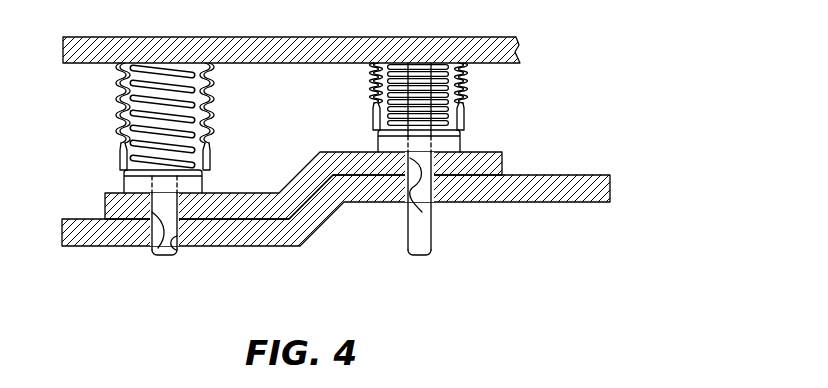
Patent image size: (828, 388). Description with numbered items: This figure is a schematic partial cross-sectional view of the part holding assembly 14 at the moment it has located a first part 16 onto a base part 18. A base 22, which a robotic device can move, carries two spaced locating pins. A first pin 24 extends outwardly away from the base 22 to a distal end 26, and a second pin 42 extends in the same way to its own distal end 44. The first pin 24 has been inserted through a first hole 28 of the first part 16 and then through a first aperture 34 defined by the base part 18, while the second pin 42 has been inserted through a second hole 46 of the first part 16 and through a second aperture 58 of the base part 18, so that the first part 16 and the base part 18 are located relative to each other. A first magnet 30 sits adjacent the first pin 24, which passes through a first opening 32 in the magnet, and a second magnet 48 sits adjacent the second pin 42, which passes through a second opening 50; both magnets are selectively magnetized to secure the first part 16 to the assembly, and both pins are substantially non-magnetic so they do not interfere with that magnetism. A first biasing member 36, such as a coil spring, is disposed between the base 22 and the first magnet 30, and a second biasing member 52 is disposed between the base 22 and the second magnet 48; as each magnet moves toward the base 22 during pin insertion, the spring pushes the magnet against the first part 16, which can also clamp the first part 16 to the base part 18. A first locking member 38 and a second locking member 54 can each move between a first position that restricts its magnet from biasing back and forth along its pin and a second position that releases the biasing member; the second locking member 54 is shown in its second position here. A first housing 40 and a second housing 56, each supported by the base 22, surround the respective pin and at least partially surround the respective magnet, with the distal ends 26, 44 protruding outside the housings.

The part holding assembly 14 is at (578, 52).
The first part 16 is at (505, 163).
The base part 18 is at (612, 190).
The base 22 is at (272, 48).
The first pin 24 is at (120, 126).
The distal end 26 is at (180, 245).
The first hole 28 is at (153, 238).
The first magnet 30 is at (204, 184).
The first opening 32 is at (152, 180).
The first aperture 34 is at (166, 258).
The first biasing member 36 is at (211, 108).
The first locking member 38 is at (121, 168).
The first housing 40 is at (209, 150).
The second pin 42 is at (470, 83).
The distal end 44 is at (416, 258).
The second hole 46 is at (407, 202).
The second magnet 48 is at (455, 150).
The second opening 50 is at (404, 140).
The second biasing member 52 is at (373, 114).
The second locking member 54 is at (378, 127).
The second housing 56 is at (462, 122).
The second aperture 58 is at (432, 215).